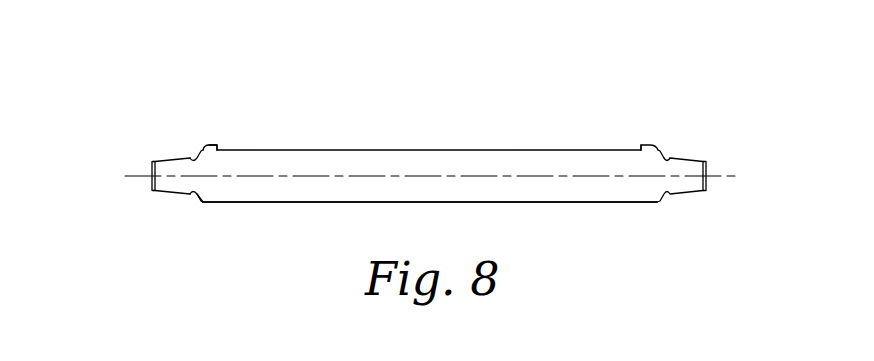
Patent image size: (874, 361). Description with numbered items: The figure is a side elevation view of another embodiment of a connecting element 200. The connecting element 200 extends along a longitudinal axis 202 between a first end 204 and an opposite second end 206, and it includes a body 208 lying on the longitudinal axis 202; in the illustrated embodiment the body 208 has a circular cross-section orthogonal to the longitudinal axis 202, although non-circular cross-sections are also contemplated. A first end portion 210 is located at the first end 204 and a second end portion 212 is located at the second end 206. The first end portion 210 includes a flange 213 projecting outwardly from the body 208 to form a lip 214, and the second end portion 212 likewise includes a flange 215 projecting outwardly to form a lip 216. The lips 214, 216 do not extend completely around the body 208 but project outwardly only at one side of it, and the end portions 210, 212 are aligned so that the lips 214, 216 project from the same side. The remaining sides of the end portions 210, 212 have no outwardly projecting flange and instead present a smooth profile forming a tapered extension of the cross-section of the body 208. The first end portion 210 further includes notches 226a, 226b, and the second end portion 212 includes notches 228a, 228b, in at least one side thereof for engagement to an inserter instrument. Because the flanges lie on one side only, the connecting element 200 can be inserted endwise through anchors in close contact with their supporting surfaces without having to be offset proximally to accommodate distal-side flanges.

The connecting element 200 is at (501, 118).
The longitudinal axis 202 is at (367, 175).
The first end 204 is at (151, 162).
The second end 206 is at (706, 163).
The body 208 is at (550, 187).
The first end portion 210 is at (200, 196).
The second end portion 212 is at (661, 153).
The flange 213 is at (202, 149).
The lip 214 is at (218, 146).
The flange 215 is at (651, 145).
The lip 216 is at (642, 150).
The notch 226a is at (193, 158).
The notch 226b is at (191, 195).
The notch 228a is at (666, 158).
The notch 228b is at (663, 199).